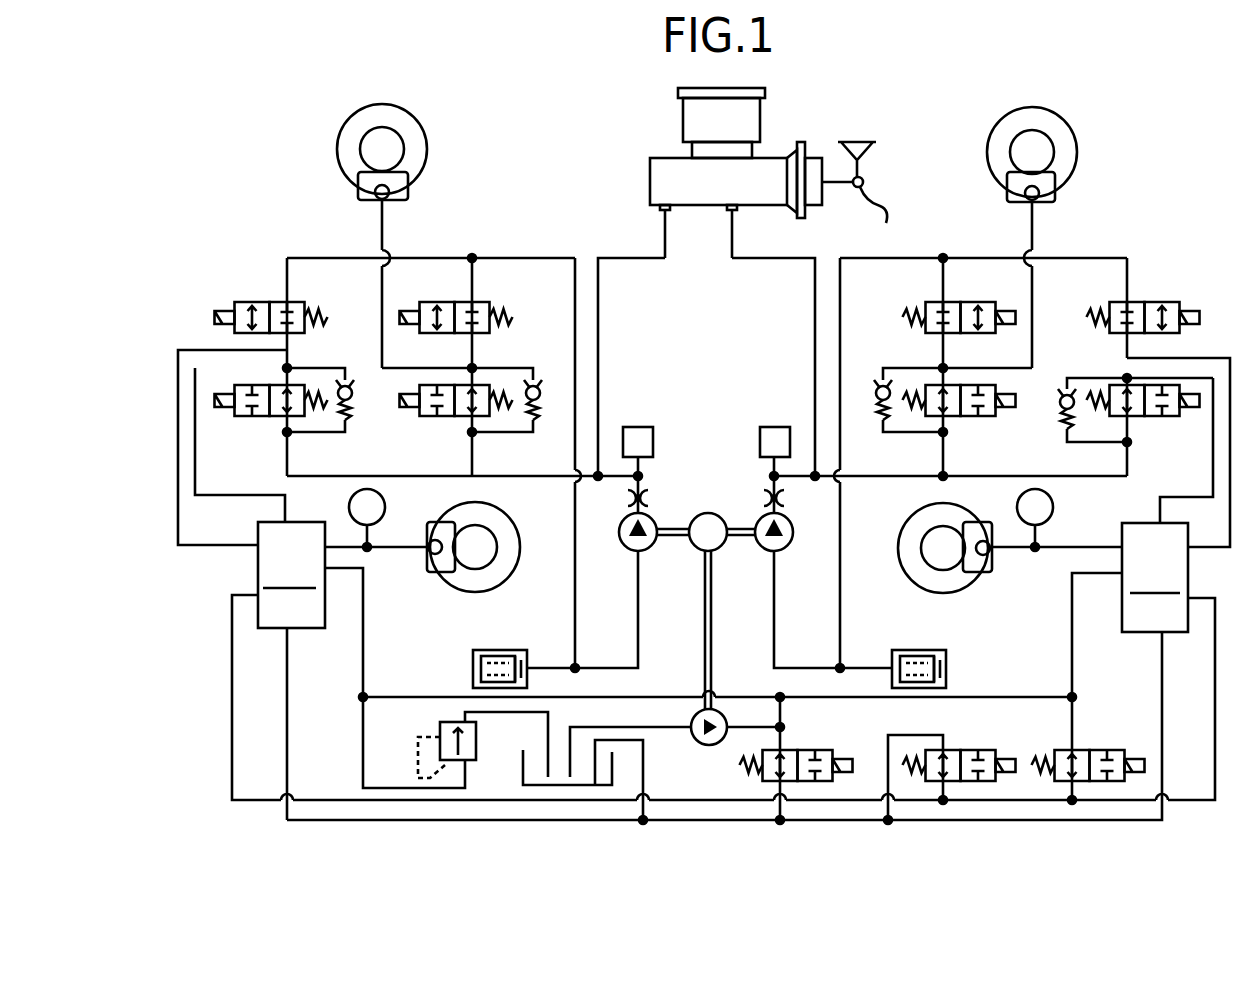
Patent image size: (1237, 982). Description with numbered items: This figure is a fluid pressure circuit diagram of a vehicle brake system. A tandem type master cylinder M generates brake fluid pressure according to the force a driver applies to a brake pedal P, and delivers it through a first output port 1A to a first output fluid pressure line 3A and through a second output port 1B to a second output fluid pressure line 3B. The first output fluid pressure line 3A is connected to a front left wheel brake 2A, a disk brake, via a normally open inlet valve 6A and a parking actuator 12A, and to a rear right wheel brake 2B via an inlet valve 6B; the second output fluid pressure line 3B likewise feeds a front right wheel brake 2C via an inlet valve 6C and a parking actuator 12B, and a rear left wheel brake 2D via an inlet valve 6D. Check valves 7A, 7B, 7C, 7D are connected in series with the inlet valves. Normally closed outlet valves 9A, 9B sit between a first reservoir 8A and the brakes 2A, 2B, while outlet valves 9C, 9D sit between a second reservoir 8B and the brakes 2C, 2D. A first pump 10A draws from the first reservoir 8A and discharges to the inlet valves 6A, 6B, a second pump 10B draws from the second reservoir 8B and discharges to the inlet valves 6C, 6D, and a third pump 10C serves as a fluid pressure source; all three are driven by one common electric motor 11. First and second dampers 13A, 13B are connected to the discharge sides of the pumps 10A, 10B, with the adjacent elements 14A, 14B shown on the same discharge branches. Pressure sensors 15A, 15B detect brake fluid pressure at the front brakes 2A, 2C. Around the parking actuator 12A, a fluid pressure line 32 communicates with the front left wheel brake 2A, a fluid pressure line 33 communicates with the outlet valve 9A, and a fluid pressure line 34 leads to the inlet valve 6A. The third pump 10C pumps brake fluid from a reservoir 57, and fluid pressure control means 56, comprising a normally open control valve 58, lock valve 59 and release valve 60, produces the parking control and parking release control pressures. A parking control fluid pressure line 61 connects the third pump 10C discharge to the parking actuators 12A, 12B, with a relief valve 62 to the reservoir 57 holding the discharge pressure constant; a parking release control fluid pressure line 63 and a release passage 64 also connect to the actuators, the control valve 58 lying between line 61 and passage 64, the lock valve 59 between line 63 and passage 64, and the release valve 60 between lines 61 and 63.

The master cylinder M is at (662, 181).
The brake pedal P is at (880, 206).
The first output port 1A is at (663, 208).
The second output port 1B is at (735, 209).
The first output fluid pressure line 3A is at (598, 258).
The second output fluid pressure line 3B is at (790, 258).
The front left wheel brake 2A is at (520, 582).
The rear right wheel brake 2B is at (334, 149).
The front right wheel brake 2C is at (893, 562).
The rear left wheel brake 2D is at (1082, 152).
The outlet valve 9A is at (248, 302).
The outlet valve 9B is at (480, 302).
The outlet valve 9C is at (1148, 302).
The outlet valve 9D is at (955, 302).
The inlet valve 6A is at (260, 416).
The inlet valve 6B is at (448, 416).
The inlet valve 6C is at (1148, 416).
The inlet valve 6D is at (966, 416).
The check valve 7A is at (353, 397).
The check valve 7B is at (541, 397).
The check valve 7C is at (1060, 402).
The check valve 7D is at (876, 393).
The first damper 13A is at (642, 430).
The second damper 13B is at (762, 440).
The orifice 14A is at (672, 492).
The orifice 14B is at (764, 498).
The first pump 10A is at (648, 542).
The second pump 10B is at (765, 543).
The third pump 10C is at (696, 740).
The electric motor 11 is at (720, 505).
The parking actuator 12A is at (291, 671).
The parking actuator 12B is at (1176, 495).
The pressure sensor 15A is at (386, 507).
The pressure sensor 15B is at (1053, 507).
The fluid pressure line 32 is at (396, 548).
The fluid pressure line 33 is at (216, 545).
The fluid pressure line 34 is at (287, 512).
The first reservoir 8A is at (468, 648).
The second reservoir 8B is at (923, 648).
The fluid pressure control means 56 is at (1102, 726).
The reservoir 57 is at (522, 770).
The control valve 58 is at (800, 750).
The lock valve 59 is at (985, 750).
The release valve 60 is at (1058, 750).
The parking control fluid pressure line 61 is at (748, 695).
The relief valve 62 is at (440, 722).
The parking release control fluid pressure line 63 is at (232, 697).
The release passage 64 is at (540, 822).